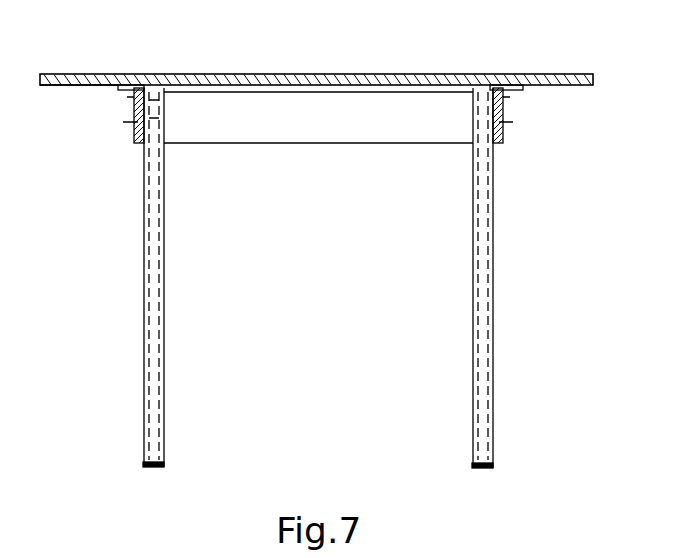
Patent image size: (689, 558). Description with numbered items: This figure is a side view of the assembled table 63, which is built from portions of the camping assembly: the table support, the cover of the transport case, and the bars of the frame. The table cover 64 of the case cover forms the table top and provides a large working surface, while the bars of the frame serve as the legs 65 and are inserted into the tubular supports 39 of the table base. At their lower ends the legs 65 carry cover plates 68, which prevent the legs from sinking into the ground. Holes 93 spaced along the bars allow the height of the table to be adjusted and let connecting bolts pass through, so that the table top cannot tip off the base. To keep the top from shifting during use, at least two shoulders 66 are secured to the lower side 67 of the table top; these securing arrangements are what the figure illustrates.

The table cover 64 is at (270, 75).
The lower side of the table top 67 is at (80, 87).
The shoulders 66 is at (113, 92).
The legs 65 is at (150, 337).
The cover plates 68 is at (147, 470).
The tubular supports 39 is at (470, 122).
The holes 93 is at (156, 125).
The table 63 is at (590, 178).